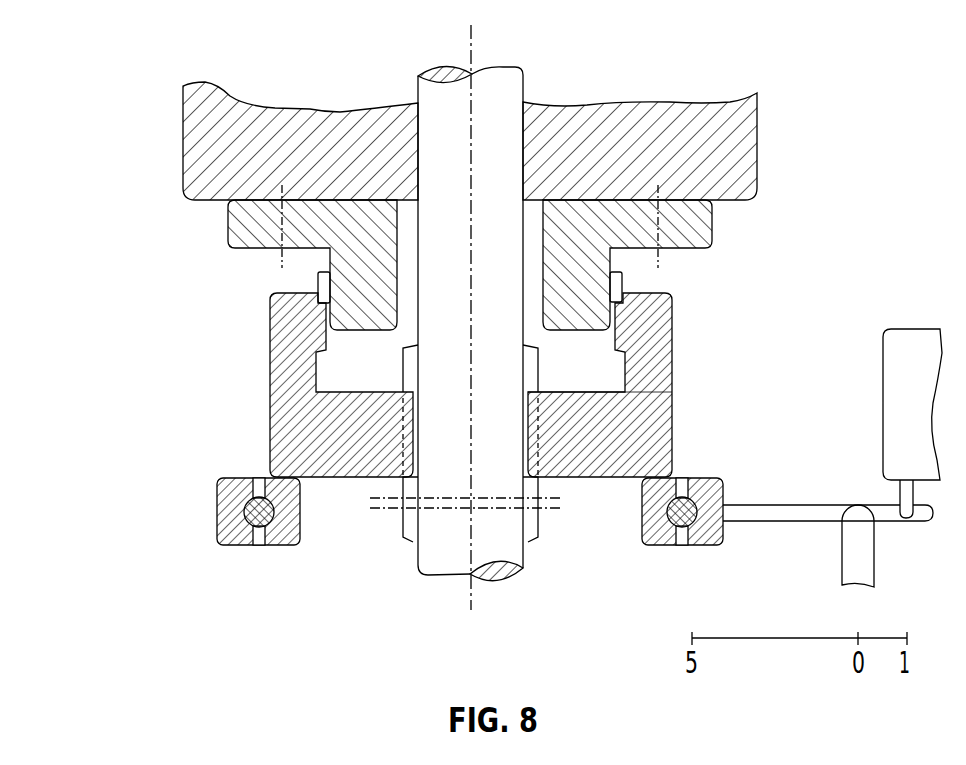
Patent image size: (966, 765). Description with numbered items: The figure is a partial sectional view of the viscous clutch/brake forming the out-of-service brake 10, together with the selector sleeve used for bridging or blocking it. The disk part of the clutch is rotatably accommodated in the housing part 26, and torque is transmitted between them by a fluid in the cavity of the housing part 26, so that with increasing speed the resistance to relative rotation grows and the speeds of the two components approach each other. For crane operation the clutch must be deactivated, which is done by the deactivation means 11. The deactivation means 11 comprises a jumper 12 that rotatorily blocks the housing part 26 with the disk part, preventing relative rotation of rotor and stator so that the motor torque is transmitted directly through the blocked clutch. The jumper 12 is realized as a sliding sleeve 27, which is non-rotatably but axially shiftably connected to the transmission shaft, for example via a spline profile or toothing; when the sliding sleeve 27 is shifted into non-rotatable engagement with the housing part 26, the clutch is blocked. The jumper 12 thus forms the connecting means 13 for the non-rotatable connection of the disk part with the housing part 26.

The out-of-service brake 10 is at (791, 222).
The housing part 26 is at (706, 120).
The connecting means 13 is at (634, 288).
The jumper 12 is at (238, 372).
The deactivation means 11 is at (711, 358).
The sliding sleeve 27 is at (660, 422).